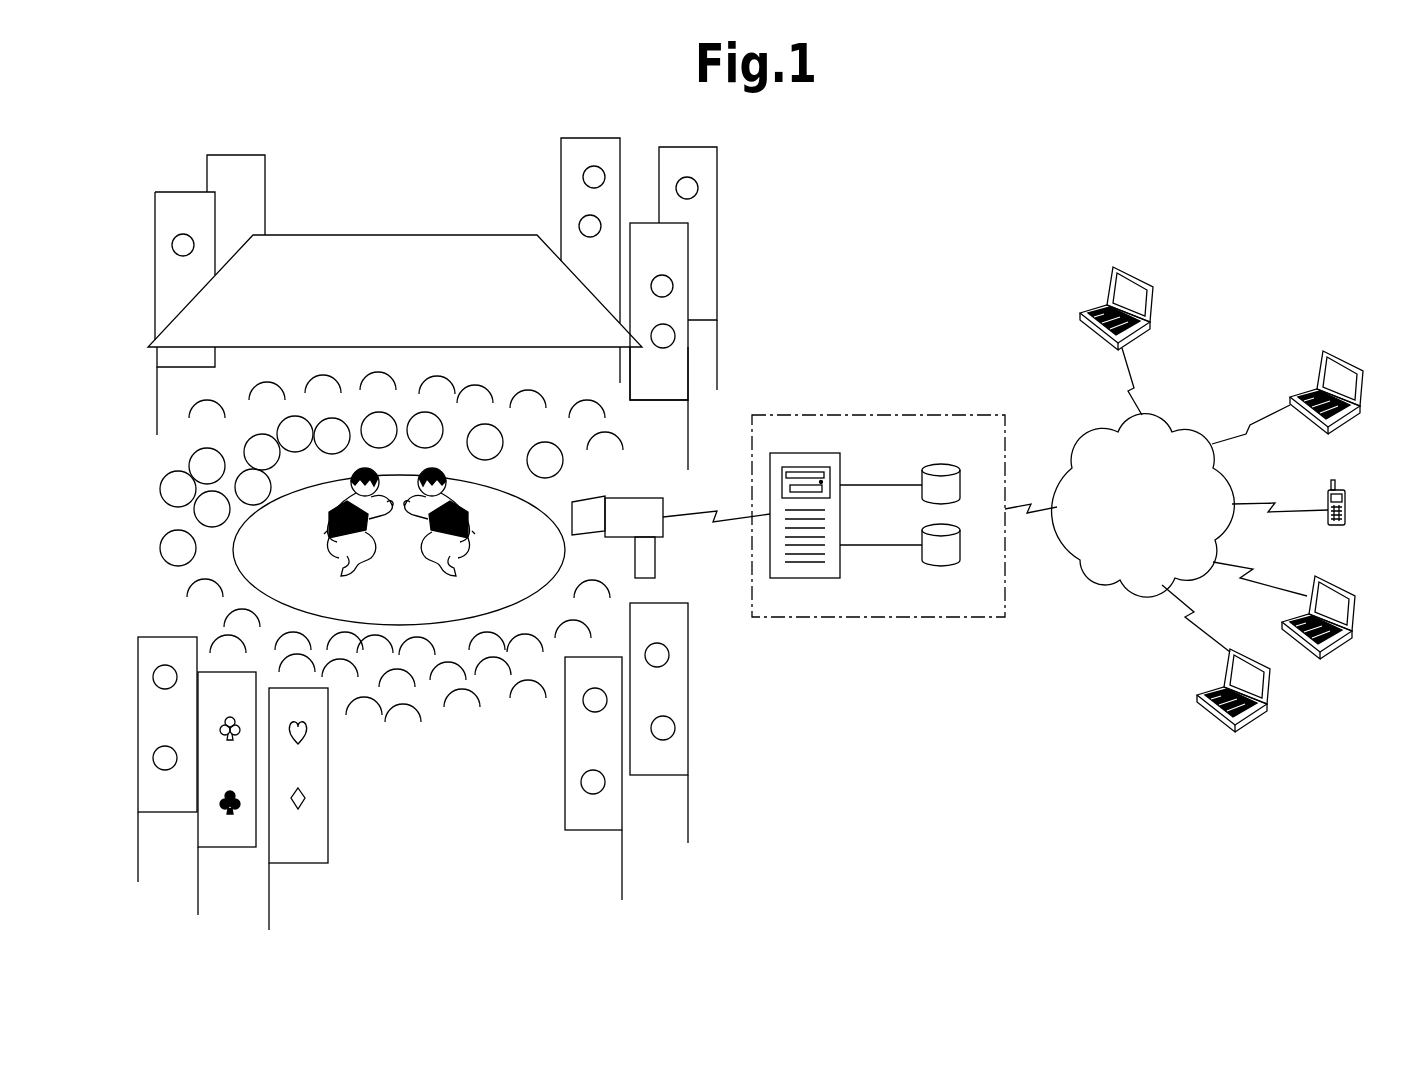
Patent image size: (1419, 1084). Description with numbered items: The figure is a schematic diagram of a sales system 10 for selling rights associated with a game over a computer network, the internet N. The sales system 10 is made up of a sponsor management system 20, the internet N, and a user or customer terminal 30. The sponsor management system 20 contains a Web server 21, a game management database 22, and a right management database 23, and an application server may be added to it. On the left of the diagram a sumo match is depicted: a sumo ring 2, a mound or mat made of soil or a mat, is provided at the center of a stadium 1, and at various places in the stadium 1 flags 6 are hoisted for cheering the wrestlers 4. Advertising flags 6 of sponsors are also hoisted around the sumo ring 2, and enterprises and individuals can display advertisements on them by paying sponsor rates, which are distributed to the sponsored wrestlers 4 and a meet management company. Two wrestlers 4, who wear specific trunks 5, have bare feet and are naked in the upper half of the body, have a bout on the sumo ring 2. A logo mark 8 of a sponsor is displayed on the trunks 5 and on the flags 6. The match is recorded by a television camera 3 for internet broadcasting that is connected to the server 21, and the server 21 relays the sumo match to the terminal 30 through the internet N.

The stadium 1 is at (408, 207).
The sumo ring 2 is at (540, 496).
The television camera 3 is at (645, 498).
The wrestlers 4 is at (342, 576).
The trunks 5 is at (324, 534).
The flags 6 is at (245, 155).
The logo mark 8 is at (579, 226).
The sales system 10 is at (925, 287).
The sponsor management system 20 is at (909, 630).
The Web server 21 is at (800, 578).
The game management database 22 is at (944, 467).
The right management database 23 is at (944, 565).
The user terminal 30 is at (1143, 276).
The internet N is at (1097, 576).